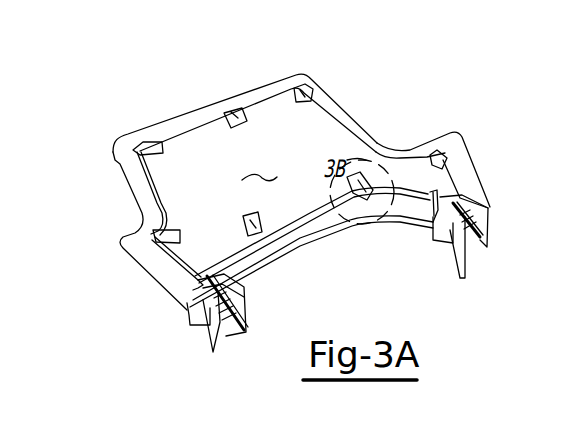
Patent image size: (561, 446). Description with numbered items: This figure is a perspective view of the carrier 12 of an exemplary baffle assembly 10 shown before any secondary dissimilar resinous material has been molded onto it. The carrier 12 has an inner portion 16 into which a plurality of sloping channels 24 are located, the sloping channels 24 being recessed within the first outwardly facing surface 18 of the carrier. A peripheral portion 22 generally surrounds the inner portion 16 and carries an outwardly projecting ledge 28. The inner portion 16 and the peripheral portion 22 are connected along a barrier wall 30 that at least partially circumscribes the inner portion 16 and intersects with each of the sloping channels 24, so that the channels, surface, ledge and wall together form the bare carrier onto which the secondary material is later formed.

The baffle assembly 10 is at (370, 65).
The carrier 12 is at (212, 157).
The inner portion 16 is at (327, 137).
The first outwardly facing surface 18 is at (259, 166).
The peripheral portion 22 is at (157, 182).
The sloping channels 24 is at (113, 152).
The outwardly projecting ledge 28 is at (180, 288).
The barrier wall 30 is at (173, 262).